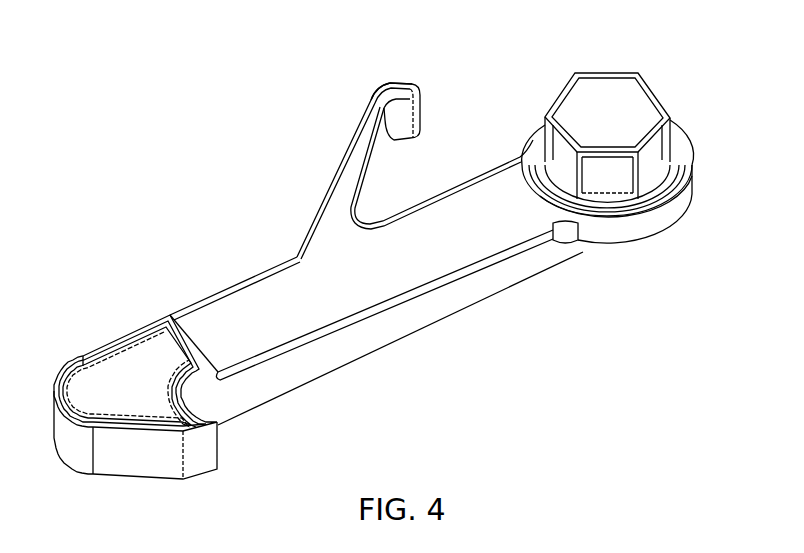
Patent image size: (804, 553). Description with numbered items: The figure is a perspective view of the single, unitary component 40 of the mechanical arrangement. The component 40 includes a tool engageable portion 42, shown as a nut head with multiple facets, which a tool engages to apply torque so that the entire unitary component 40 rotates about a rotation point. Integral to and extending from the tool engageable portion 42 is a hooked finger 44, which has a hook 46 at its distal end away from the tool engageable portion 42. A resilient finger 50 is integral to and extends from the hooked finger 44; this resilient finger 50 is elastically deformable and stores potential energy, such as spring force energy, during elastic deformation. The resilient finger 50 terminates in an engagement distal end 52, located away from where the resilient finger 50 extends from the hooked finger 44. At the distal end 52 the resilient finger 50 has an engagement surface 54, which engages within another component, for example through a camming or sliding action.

The single, unitary component 40 is at (478, 364).
The tool engageable portion 42 is at (635, 105).
The hooked finger 44 is at (150, 350).
The hook 46 is at (210, 451).
The resilient finger 50 is at (357, 157).
The engagement distal end 52 is at (402, 120).
The engagement surface 54 is at (387, 78).